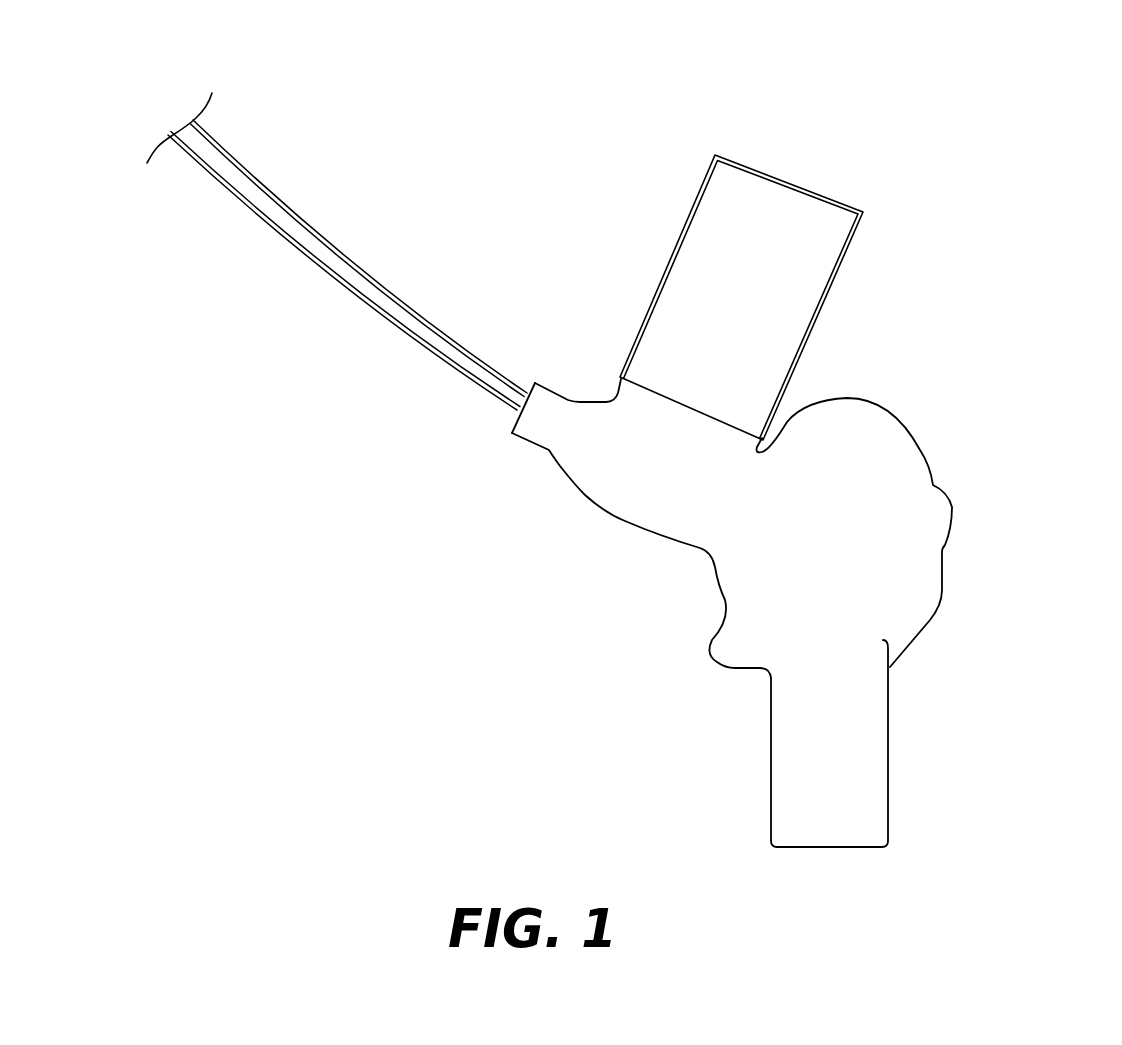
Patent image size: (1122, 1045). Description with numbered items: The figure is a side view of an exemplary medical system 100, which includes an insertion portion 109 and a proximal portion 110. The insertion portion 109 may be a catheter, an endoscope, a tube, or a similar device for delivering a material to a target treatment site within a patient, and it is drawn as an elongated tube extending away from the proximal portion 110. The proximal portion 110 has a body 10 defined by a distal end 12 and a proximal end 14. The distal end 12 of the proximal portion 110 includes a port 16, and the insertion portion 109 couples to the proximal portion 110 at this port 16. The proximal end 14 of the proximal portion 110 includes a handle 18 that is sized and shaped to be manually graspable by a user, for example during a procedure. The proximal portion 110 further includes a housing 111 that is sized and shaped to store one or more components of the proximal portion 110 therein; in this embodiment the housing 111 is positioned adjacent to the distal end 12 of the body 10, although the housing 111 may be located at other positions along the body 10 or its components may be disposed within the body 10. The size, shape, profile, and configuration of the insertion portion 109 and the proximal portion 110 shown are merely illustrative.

The medical system 100 is at (980, 68).
The insertion portion 109 is at (278, 168).
The housing 111 is at (700, 190).
The proximal portion 110 is at (915, 384).
The body 10 is at (925, 518).
The distal end 12 is at (627, 473).
The proximal end 14 is at (937, 722).
The port 16 is at (514, 421).
The handle 18 is at (783, 763).